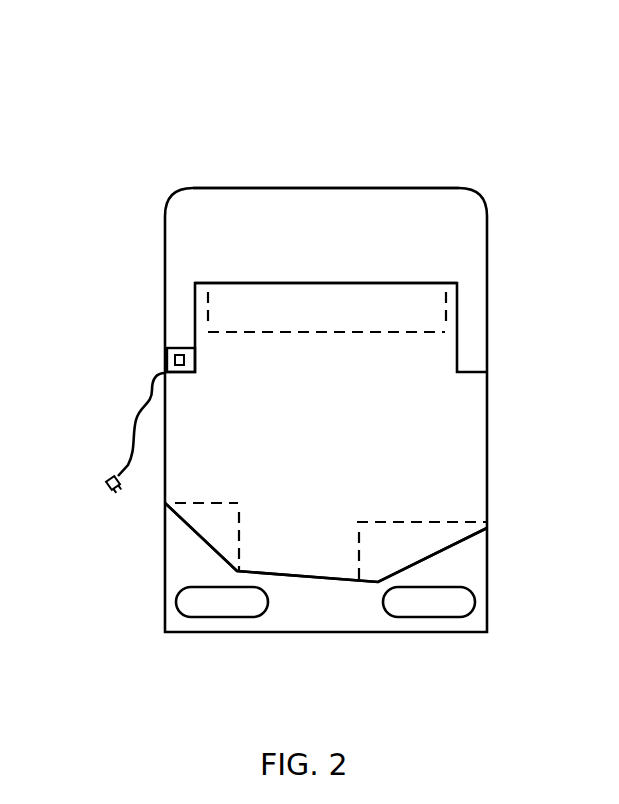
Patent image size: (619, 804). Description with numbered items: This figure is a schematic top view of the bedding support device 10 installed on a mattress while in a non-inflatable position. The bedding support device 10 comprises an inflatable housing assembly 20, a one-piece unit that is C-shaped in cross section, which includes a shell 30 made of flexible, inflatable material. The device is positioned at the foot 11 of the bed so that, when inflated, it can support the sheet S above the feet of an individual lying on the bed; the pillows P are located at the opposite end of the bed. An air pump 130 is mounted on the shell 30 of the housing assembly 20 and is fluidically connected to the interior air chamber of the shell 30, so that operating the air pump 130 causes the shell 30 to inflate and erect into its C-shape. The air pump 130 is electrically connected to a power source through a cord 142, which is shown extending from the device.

The bedding support device 10 is at (487, 185).
The inflatable housing assembly 20 is at (242, 187).
The foot of the bed 11 is at (430, 308).
The shell 30 is at (349, 269).
The sheet S is at (337, 441).
The air pump 130 is at (173, 362).
The cord 142 is at (130, 413).
The pillows P is at (233, 604).